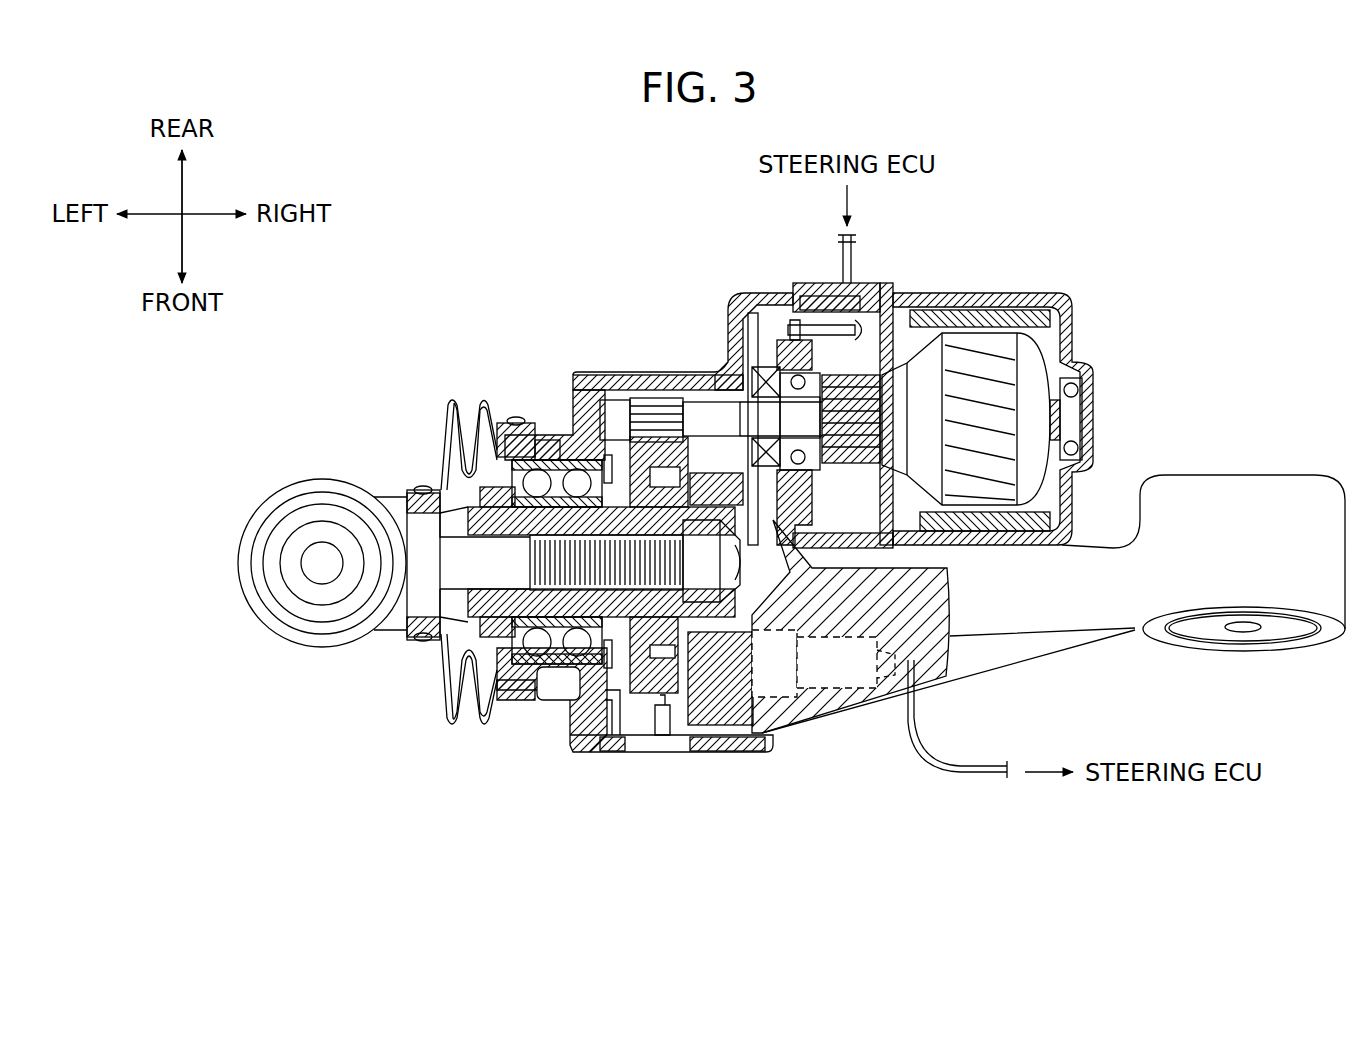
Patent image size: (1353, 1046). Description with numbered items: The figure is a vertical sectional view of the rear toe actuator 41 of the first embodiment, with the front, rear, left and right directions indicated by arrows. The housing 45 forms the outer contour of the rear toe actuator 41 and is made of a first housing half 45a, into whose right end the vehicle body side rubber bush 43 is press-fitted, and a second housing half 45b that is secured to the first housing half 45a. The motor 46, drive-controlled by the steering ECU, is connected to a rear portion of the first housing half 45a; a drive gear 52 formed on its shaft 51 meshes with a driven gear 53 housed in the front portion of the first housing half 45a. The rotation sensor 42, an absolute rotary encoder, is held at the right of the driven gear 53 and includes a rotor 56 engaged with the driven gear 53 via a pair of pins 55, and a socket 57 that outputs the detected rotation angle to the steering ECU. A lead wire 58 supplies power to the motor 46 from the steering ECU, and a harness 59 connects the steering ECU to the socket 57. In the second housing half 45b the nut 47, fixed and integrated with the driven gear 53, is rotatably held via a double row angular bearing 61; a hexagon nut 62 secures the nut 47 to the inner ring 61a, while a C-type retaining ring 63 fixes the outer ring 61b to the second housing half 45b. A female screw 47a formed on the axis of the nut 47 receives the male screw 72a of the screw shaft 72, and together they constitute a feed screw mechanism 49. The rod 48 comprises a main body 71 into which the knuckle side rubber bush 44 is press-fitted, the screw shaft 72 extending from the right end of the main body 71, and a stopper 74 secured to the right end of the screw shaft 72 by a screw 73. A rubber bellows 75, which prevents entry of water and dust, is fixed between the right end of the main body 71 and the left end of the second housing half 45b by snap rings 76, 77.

The rear toe actuator 41 is at (490, 287).
The rotation sensor 42 is at (723, 738).
The vehicle body side rubber bush 43 is at (1280, 632).
The knuckle side rubber bush 44 is at (280, 532).
The housing 45 is at (700, 373).
The first housing half 45a is at (1010, 651).
The second housing half 45b is at (592, 720).
The motor 46 is at (985, 295).
The nut 47 is at (490, 640).
The female screw 47a is at (560, 694).
The rod 48 is at (287, 649).
The feed screw mechanism 49 is at (360, 668).
The shaft 51 is at (693, 415).
The drive gear 52 is at (640, 412).
The driven gear 53 is at (640, 702).
The pins 55 is at (655, 470).
The rotor 56 is at (710, 630).
The socket 57 is at (850, 700).
The lead wire 58 is at (852, 268).
The harness 59 is at (975, 779).
The double row angular bearing 61 is at (556, 452).
The inner ring 61a is at (455, 702).
The outer ring 61b is at (483, 716).
The hexagon nut 62 is at (482, 492).
The C-type retaining ring 63 is at (606, 676).
The main body 71 is at (309, 486).
The screw shaft 72 is at (458, 580).
The male screw 72a is at (503, 707).
The screw 73 is at (805, 690).
The stopper 74 is at (738, 580).
The rubber bellows 75 is at (455, 398).
The snap ring 76 is at (423, 488).
The snap ring 77 is at (516, 412).